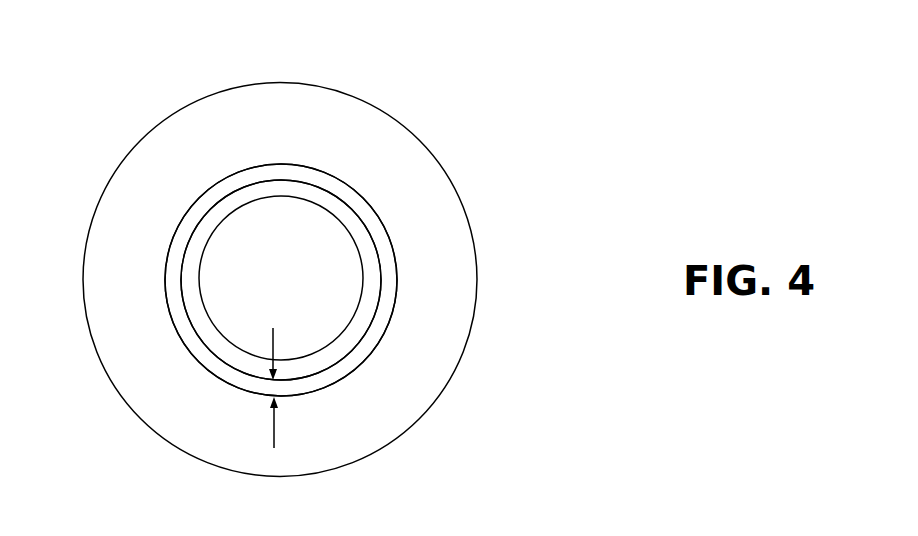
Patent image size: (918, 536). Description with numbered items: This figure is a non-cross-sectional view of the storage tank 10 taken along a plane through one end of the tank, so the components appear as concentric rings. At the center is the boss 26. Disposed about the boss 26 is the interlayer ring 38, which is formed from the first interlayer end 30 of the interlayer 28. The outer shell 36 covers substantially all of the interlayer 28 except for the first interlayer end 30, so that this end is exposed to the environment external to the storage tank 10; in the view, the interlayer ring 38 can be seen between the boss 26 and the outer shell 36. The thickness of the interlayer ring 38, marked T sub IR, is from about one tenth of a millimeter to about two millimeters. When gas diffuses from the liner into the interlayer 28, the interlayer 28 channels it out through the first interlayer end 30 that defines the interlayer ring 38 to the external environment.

The storage tank 10 is at (353, 238).
The boss 26 is at (313, 197).
The interlayer 28 is at (394, 265).
The first interlayer end 30 is at (394, 265).
The interlayer ring 38 is at (375, 233).
The outer shell 36 is at (427, 280).